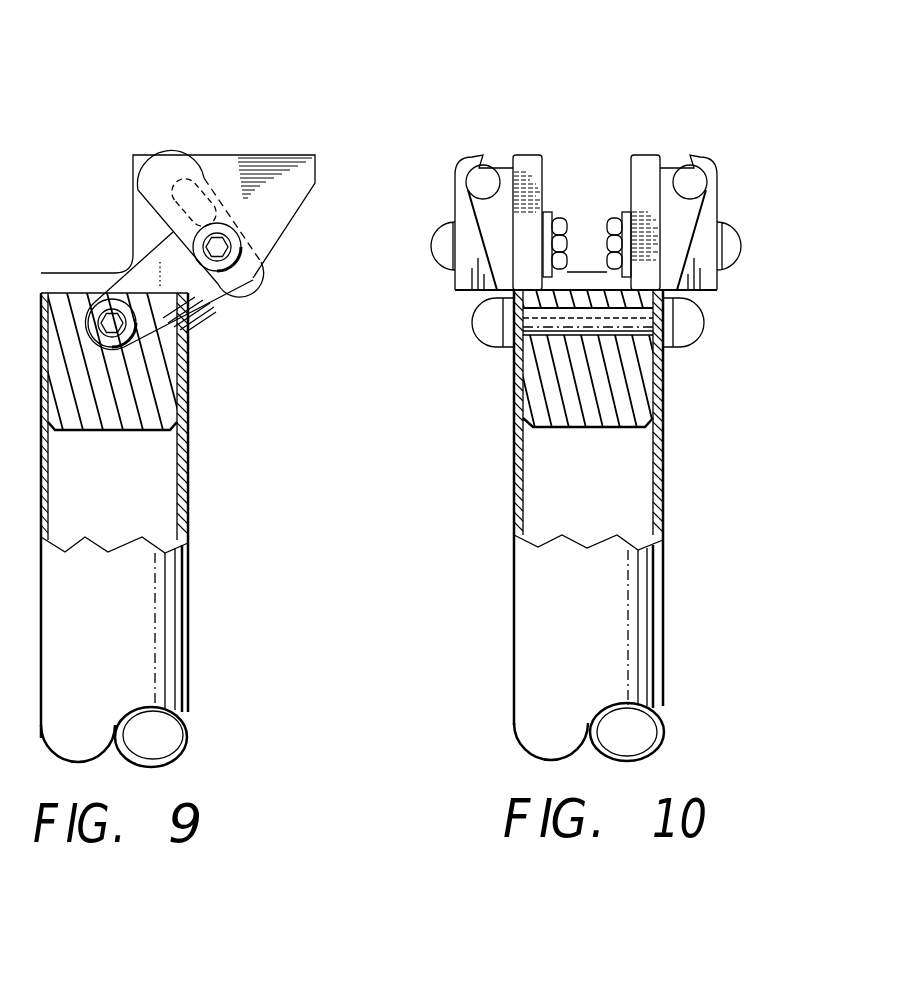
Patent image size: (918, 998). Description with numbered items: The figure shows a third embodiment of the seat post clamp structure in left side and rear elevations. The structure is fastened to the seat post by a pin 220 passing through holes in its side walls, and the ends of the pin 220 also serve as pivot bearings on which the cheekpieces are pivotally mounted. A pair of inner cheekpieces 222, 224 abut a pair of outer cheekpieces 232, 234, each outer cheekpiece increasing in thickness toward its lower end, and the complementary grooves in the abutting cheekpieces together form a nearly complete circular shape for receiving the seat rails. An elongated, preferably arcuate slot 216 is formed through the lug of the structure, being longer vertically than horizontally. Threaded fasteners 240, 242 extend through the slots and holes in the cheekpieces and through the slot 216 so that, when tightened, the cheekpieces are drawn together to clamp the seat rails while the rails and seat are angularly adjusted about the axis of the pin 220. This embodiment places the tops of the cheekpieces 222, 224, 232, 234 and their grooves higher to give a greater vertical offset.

In FIG. 9, the elongated arcuate slot 216 is at (178, 183).
In FIG. 9, the pin 220 is at (130, 340).
In FIG. 10, the pin 220 is at (476, 322).
In FIG. 10, the inner cheekpiece 222 is at (503, 167).
In FIG. 10, the inner cheekpiece 224 is at (670, 167).
In FIG. 10, the outer cheekpiece 232 is at (468, 167).
In FIG. 10, the outer cheekpiece 234 is at (713, 167).
In FIG. 9, the threaded fastener 240 is at (253, 278).
In FIG. 10, the threaded fastener 240 is at (440, 240).
In FIG. 10, the threaded fastener 242 is at (733, 238).